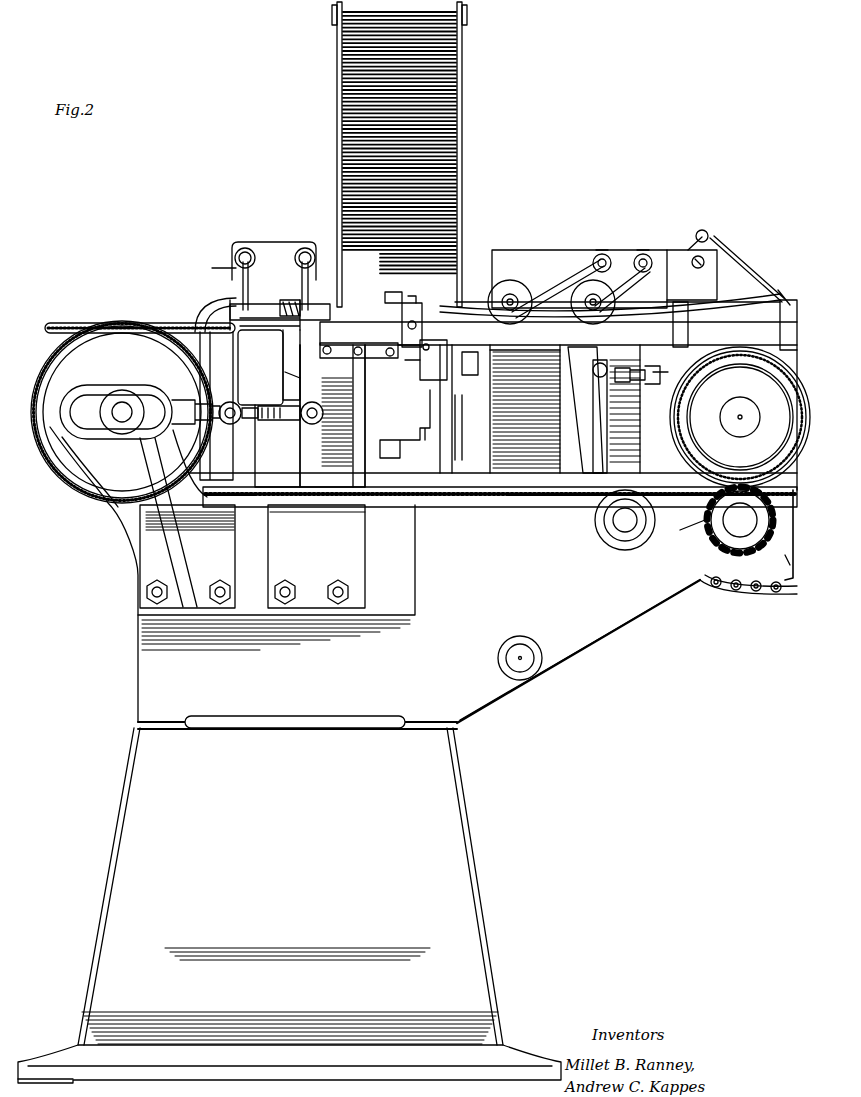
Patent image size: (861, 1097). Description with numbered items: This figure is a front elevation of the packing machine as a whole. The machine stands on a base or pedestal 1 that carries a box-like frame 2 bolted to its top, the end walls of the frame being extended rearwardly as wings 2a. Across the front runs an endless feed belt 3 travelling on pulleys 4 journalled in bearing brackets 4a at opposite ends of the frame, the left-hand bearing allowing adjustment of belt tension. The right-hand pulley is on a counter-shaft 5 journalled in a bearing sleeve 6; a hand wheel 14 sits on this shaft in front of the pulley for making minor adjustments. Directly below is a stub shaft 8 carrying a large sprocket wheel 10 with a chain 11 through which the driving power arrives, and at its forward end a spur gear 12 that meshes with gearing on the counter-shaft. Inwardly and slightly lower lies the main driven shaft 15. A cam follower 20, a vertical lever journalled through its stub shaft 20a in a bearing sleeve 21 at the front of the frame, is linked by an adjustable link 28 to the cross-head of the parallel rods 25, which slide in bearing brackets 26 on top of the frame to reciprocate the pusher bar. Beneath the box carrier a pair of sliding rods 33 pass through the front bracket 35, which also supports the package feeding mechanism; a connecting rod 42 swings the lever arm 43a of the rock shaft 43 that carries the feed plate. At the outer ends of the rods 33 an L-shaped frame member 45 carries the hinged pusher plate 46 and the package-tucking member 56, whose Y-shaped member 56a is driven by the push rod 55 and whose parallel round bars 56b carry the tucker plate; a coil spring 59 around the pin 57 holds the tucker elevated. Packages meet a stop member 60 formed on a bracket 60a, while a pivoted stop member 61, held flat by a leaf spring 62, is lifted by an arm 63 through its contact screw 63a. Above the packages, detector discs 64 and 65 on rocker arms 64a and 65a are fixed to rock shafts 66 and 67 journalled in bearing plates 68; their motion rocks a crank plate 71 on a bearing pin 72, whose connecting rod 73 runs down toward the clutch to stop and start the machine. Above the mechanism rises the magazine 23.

The base or pedestal 1 is at (480, 954).
The box-like frame 2 is at (137, 657).
The wings 2a is at (505, 690).
The endless feed belt 3 is at (462, 495).
The pulleys 4 is at (117, 340).
The bearing brackets 4a is at (115, 482).
The counter-shaft 5 is at (742, 425).
The bearing sleeve 6 is at (740, 418).
The stub shaft 8 is at (732, 530).
The sprocket wheel 10 is at (779, 557).
The chain 11 is at (782, 600).
The spur gear 12 is at (687, 531).
The hand wheel 14 is at (760, 425).
The main driven shaft 15 is at (632, 530).
The cam follower 20 is at (608, 440).
The stub shaft 20a is at (525, 655).
The bearing sleeve 21 is at (514, 640).
The magazine 23 is at (464, 152).
The parallel rods 25 is at (475, 368).
The bearing brackets 26 is at (492, 400).
The adjustable link 28 is at (632, 382).
The sliding rods 33 is at (320, 423).
The front bracket 35 is at (345, 355).
The connecting rod 42 is at (396, 460).
The rock shaft 43 is at (445, 352).
The lever arm 43a is at (470, 430).
The L-shaped frame member 45 is at (252, 420).
The pusher plate 46 is at (258, 290).
The push rod 55 is at (288, 420).
The package-tucking member 56 is at (270, 250).
The Y-shaped member 56a is at (278, 380).
The parallel round bars 56b is at (212, 269).
The pin 57 is at (288, 295).
The coil spring 59 is at (305, 250).
The stop member 60 is at (222, 300).
The bracket 60a is at (183, 323).
The stop member 61 is at (385, 298).
The leaf spring 62 is at (400, 300).
The arm 63 is at (420, 361).
The contact screw 63a is at (355, 330).
The detector disc 64 is at (512, 282).
The rocker arm 64a is at (558, 288).
The detector disc 65 is at (610, 285).
The rocker arm 65a is at (667, 283).
The rock shaft 66 is at (604, 252).
The rock shaft 67 is at (648, 252).
The bearing plates 68 is at (550, 250).
The crank plate 71 is at (698, 228).
The bearing pin 72 is at (704, 258).
The connecting rod 73 is at (745, 270).